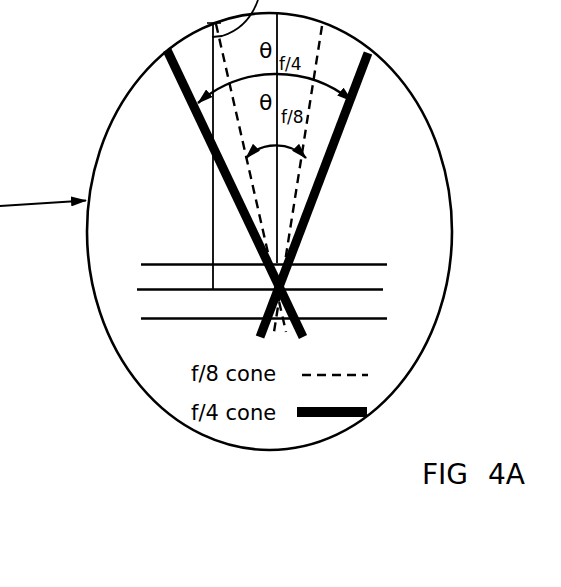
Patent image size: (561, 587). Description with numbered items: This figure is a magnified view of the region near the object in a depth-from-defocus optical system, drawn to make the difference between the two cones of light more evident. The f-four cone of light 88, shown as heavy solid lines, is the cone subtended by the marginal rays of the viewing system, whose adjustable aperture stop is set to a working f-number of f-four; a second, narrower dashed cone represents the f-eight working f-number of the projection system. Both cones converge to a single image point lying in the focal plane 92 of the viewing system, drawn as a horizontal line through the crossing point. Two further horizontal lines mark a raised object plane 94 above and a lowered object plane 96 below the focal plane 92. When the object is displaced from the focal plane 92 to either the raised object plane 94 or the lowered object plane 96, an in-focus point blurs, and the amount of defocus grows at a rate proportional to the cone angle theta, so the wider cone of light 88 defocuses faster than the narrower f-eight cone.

The f/4 cone of light 88 is at (198, 122).
The focal plane 92 is at (163, 263).
The raised object plane 94 is at (338, 263).
The lowered object plane 96 is at (332, 319).